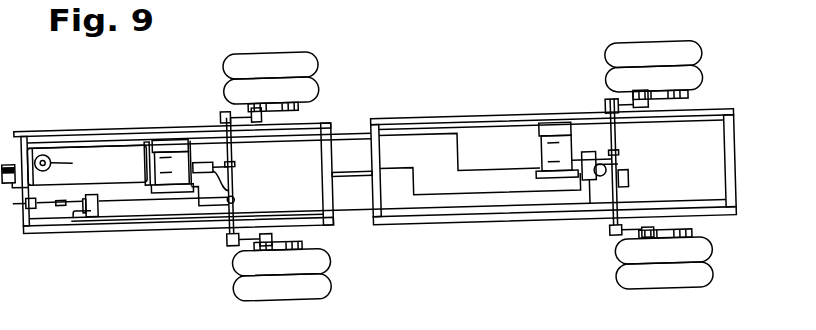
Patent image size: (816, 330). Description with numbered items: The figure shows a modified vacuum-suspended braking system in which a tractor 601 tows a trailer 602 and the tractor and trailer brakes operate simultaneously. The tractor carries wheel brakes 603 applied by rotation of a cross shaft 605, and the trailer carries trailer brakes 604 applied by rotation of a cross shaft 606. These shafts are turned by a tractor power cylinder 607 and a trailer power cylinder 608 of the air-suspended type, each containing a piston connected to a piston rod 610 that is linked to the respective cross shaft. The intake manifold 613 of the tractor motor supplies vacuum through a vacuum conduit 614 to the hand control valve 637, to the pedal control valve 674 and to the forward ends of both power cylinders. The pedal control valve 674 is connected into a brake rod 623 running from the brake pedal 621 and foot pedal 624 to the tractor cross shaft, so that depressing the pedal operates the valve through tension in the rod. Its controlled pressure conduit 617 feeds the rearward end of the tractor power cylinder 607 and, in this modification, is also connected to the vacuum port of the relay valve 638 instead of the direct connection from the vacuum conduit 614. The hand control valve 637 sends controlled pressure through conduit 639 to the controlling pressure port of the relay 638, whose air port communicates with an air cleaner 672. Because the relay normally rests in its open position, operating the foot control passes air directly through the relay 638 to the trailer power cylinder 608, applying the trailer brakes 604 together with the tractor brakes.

The tractor 601 is at (139, 118).
The trailer 602 is at (512, 105).
The tractor wheel brakes 603 is at (302, 103).
The trailer brakes 604 is at (686, 84).
The tractor cross shaft 605 is at (234, 148).
The trailer cross shaft 606 is at (617, 136).
The tractor power cylinder 607 is at (170, 142).
The trailer power cylinder 608 is at (555, 146).
The piston rod 610 is at (234, 182).
The intake manifold 613 is at (4, 154).
The vacuum conduit 614 is at (29, 131).
The controlled pressure conduit 617 is at (125, 223).
The brake pedal 621 is at (73, 154).
The brake rod 623 is at (178, 197).
The foot pedal 624 is at (31, 223).
The hand control valve 637 is at (49, 147).
The relay valve 638 is at (590, 190).
The controlled pressure conduit 639 is at (428, 158).
The air cleaner 672 is at (586, 157).
The pedal control valve 674 is at (90, 208).